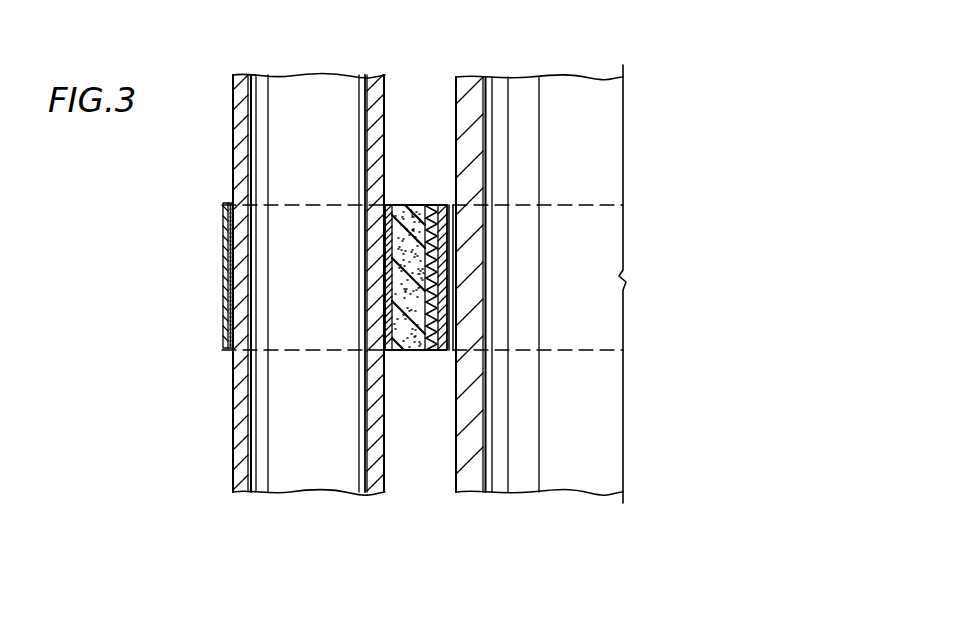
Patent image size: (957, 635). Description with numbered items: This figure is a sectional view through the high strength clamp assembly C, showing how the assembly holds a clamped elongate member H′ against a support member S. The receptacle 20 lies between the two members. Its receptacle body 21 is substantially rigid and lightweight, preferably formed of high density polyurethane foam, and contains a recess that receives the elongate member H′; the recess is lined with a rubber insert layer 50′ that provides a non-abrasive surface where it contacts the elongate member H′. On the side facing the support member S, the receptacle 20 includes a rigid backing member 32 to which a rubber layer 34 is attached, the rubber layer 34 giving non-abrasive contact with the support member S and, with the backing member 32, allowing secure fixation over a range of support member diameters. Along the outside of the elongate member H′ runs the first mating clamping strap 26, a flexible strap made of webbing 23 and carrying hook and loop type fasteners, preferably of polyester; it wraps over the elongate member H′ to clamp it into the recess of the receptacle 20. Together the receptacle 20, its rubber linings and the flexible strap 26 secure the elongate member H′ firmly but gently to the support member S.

The receptacle 20 is at (418, 205).
The receptacle body 21 is at (397, 205).
The webbing 23 is at (428, 205).
The first mating clamping strap 26 is at (225, 281).
The rigid backing member 32 is at (435, 350).
The rubber layer 34 is at (442, 266).
The rubber insert layer 50′ is at (388, 285).
The clamped elongate member H′ is at (242, 105).
The high strength clamp assembly C is at (222, 228).
The support member S is at (612, 120).